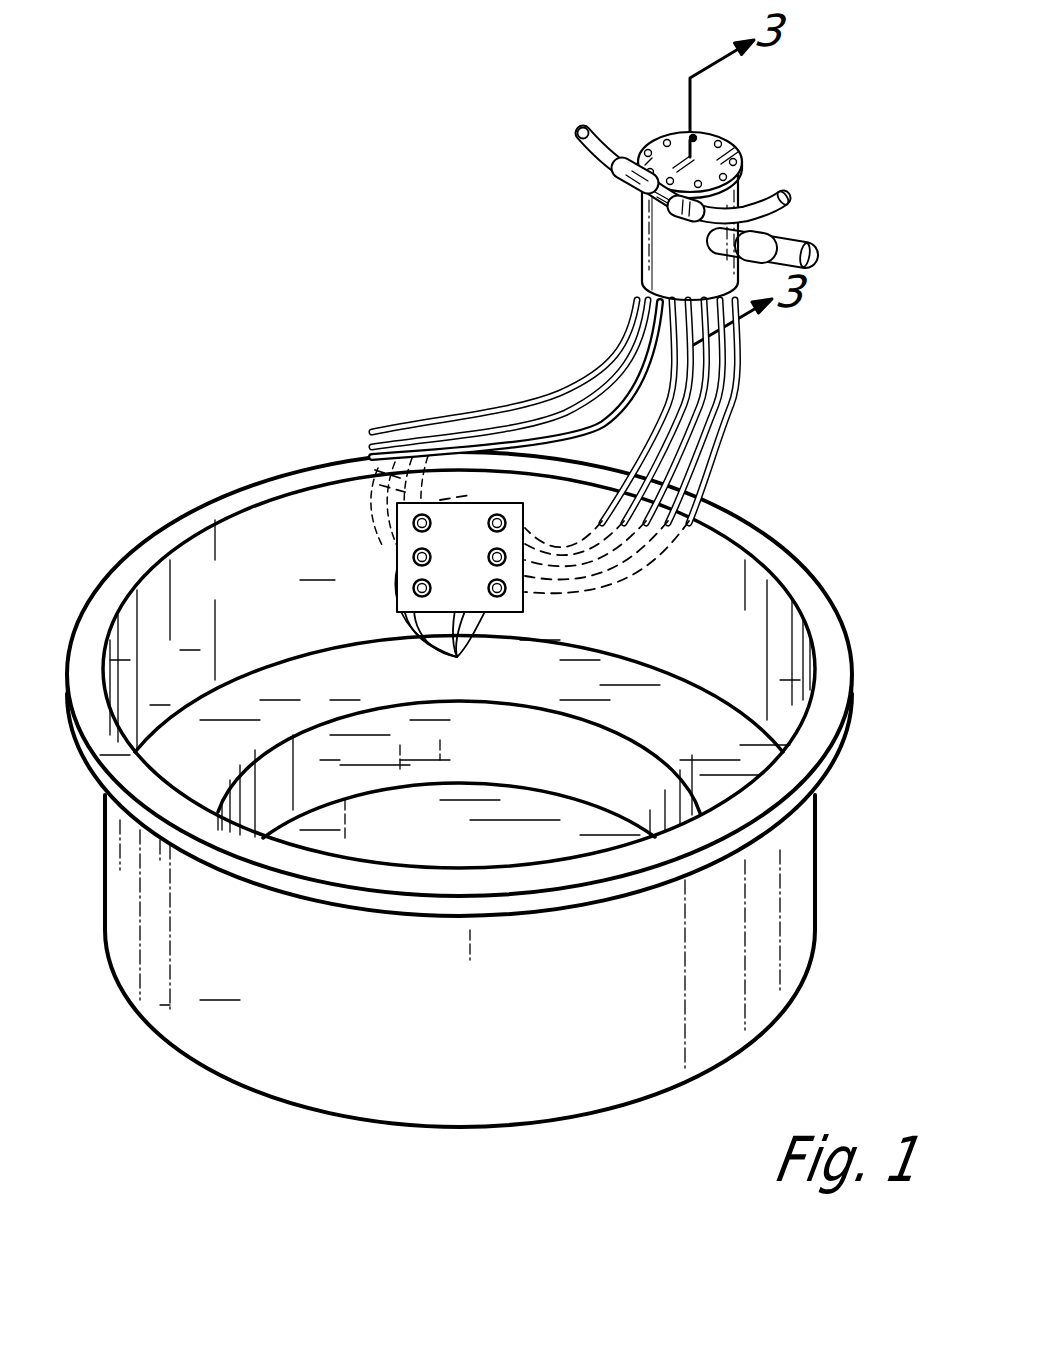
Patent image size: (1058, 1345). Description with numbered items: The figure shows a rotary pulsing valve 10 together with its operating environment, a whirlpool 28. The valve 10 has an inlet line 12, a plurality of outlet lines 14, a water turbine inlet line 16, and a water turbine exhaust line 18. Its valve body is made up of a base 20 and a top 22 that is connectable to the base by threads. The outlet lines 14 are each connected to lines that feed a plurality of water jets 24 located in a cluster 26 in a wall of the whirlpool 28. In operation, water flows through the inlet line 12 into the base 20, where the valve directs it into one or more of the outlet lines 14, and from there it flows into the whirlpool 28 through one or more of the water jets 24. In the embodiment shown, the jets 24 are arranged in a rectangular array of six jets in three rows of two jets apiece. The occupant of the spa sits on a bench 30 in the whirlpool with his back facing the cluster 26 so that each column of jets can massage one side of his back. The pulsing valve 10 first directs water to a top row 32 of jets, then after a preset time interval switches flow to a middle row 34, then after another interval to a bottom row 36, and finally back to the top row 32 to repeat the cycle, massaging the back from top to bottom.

The rotary pulsing valve 10 is at (520, 140).
The inlet line 12 is at (790, 240).
The outlet lines 14 is at (592, 417).
The water turbine inlet line 16 is at (760, 200).
The water turbine exhaust line 18 is at (605, 150).
The base 20 is at (668, 275).
The top 22 is at (703, 135).
The water jets 24 is at (451, 604).
The cluster 26 is at (433, 483).
The whirlpool 28 is at (810, 585).
The bench 30 is at (662, 723).
The top row 32 is at (398, 505).
The middle row 34 is at (398, 540).
The bottom row 36 is at (398, 568).